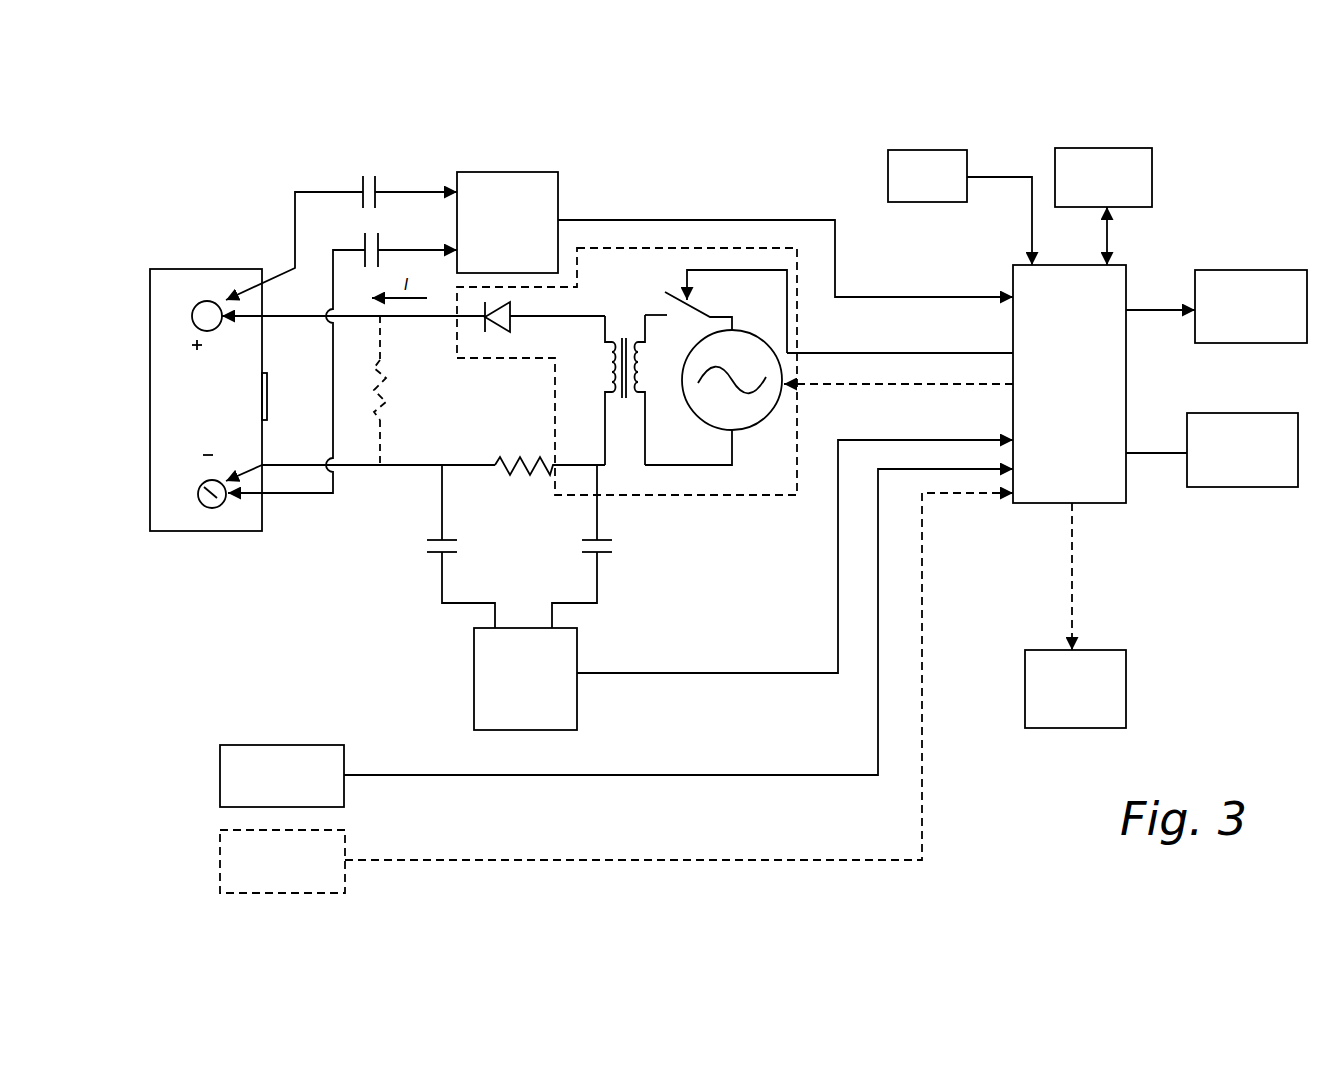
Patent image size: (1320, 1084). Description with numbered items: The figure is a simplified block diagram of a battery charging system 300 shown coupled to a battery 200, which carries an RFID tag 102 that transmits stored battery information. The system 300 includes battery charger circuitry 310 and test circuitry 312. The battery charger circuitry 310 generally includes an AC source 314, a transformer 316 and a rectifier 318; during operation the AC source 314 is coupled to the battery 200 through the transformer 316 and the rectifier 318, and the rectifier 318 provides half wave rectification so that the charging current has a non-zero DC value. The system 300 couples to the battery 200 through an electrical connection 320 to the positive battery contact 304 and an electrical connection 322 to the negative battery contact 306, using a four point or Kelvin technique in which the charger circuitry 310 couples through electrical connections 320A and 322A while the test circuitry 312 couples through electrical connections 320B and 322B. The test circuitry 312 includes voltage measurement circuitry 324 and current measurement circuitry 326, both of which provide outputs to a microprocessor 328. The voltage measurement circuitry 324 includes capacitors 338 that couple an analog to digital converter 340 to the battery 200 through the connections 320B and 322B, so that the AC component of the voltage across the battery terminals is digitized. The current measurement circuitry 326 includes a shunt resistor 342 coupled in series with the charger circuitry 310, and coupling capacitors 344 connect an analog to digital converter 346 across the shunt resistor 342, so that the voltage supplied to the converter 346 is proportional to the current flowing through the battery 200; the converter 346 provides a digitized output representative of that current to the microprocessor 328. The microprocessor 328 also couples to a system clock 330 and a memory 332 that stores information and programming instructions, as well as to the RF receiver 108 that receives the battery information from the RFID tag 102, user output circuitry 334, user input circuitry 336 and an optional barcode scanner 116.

The RFID tag 102 is at (271, 394).
The RF receiver 108 is at (616, 638).
The barcode scanner 116 is at (350, 847).
The battery 200 is at (150, 383).
The battery charging system 300 is at (1097, 407).
The positive battery contact 304 is at (192, 316).
The negative battery contact 306 is at (203, 487).
The battery charger circuitry 310 is at (723, 407).
The test circuitry 312 is at (630, 750).
The AC source 314 is at (762, 417).
The transformer 316 is at (607, 387).
The rectifier 318 is at (495, 330).
The electrical connection 320 is at (315, 277).
The electrical connection 320A is at (253, 325).
The electrical connection 320B is at (232, 296).
The electrical connection 322 is at (295, 417).
The electrical connection 322A is at (253, 467).
The electrical connection 322B is at (257, 505).
The voltage measurement circuitry 324 is at (688, 205).
The current measurement circuitry 326 is at (696, 581).
The microprocessor 328 is at (1097, 503).
The system clock 330 is at (898, 150).
The memory 332 is at (1103, 148).
The user output circuitry 334 is at (1233, 270).
The user input circuitry 336 is at (1217, 488).
The capacitors 338 is at (380, 200).
The analog to digital converter 340 is at (508, 172).
The shunt resistor 342 is at (528, 473).
The coupling capacitors 344 is at (587, 552).
The analog to digital converter 346 is at (577, 703).